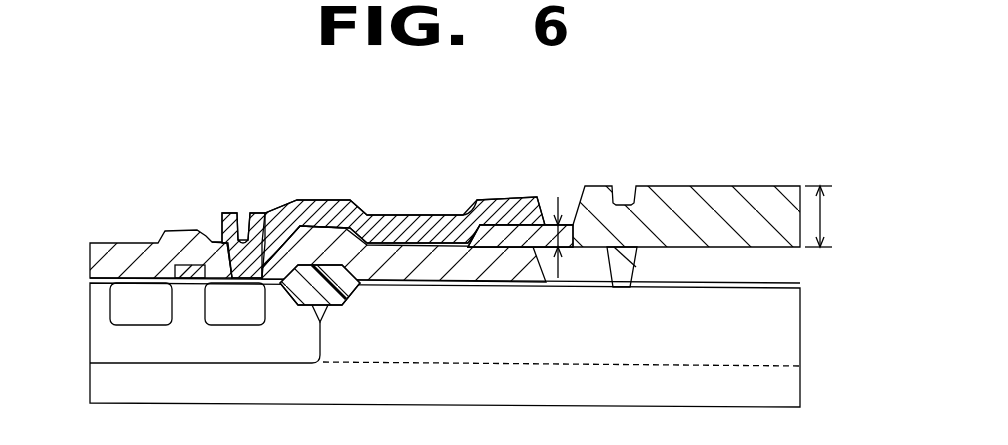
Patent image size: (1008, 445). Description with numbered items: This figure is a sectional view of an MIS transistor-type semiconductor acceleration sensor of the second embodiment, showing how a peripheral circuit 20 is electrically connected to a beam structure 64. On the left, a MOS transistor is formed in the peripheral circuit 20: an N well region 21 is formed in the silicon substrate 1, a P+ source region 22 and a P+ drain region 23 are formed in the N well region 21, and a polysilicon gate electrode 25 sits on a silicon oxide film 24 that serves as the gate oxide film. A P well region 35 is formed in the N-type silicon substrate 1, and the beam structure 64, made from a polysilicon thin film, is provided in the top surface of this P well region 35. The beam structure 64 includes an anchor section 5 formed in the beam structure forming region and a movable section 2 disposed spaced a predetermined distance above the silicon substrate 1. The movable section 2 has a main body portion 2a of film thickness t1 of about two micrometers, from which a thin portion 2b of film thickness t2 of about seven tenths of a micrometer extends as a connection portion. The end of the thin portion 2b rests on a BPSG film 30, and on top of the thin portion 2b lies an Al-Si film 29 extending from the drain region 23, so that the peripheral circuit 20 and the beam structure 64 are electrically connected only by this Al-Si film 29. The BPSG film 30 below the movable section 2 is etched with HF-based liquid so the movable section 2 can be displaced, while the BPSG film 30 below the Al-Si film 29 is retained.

The silicon substrate 1 is at (802, 390).
The movable section 2 is at (745, 250).
The main body portion 2a is at (803, 156).
The thin portion 2b is at (566, 156).
The anchor section 5 is at (637, 262).
The peripheral circuit 20 is at (312, 152).
The N well region 21 is at (274, 360).
The P+ source region 22 is at (156, 322).
The P+ drain region 23 is at (265, 308).
The silicon oxide film 24 is at (186, 284).
The polysilicon gate electrode 25 is at (190, 265).
The Al-Si film 29 is at (477, 200).
The BPSG film 30 is at (424, 250).
The P well region 35 is at (684, 368).
The beam structure 64 is at (803, 166).
The film thickness of main body portion t1 is at (832, 216).
The film thickness of thin portion t2 is at (552, 232).